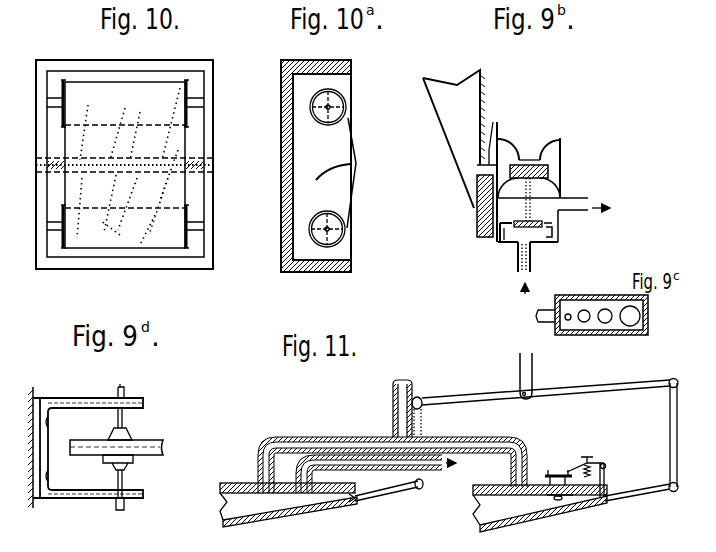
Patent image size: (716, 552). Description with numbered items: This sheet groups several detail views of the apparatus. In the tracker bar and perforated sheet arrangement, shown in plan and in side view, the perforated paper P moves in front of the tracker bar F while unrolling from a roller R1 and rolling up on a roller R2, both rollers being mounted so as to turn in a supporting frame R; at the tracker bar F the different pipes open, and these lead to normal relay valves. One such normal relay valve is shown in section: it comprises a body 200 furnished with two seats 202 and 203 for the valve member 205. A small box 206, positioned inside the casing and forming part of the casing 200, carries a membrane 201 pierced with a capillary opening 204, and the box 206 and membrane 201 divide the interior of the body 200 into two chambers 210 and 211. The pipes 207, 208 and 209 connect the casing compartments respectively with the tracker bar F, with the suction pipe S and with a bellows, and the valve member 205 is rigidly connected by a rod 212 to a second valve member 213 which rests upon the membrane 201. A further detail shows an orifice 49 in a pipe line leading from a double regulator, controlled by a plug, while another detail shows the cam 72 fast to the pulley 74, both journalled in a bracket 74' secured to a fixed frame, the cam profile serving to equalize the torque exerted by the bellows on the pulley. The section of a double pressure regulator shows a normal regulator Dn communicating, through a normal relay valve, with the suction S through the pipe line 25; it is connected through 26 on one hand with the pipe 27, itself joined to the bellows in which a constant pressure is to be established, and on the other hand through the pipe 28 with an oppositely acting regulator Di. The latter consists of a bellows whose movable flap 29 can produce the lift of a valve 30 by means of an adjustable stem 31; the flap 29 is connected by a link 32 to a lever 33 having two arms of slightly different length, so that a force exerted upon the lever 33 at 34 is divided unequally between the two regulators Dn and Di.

In FIG. 10, the supporting frame R is at (40, 118).
In FIG. 10A, the supporting frame R is at (281, 158).
In FIG. 10, the roller R1 is at (187, 93).
In FIG. 10A, the roller R1 is at (326, 121).
In FIG. 10, the roller R2 is at (188, 210).
In FIG. 10A, the roller R2 is at (318, 218).
In FIG. 10, the perforated paper P is at (172, 192).
In FIG. 10A, the perforated paper P is at (357, 137).
In FIG. 10, the tracker bar F is at (38, 163).
In FIG. 10A, the tracker bar F is at (356, 167).
In FIG. 9B, the tracker bar F is at (516, 291).
In FIG. 9B, the suction pipe S is at (447, 107).
In FIG. 11, the suction pipe S is at (381, 474).
In FIG. 9B, the pipe 209 is at (491, 125).
In FIG. 9B, the seat 202 is at (529, 163).
In FIG. 9B, the valve member 205 is at (534, 164).
In FIG. 9B, the body 200 is at (562, 165).
In FIG. 9B, the seat 203 is at (541, 186).
In FIG. 9B, the pipe 208 is at (590, 202).
In FIG. 9B, the rod 212 is at (498, 199).
In FIG. 9B, the chamber 211 is at (542, 199).
In FIG. 9B, the second valve member 213 is at (514, 224).
In FIG. 9B, the capillary opening 204 is at (552, 232).
In FIG. 9B, the small box 206 is at (497, 234).
In FIG. 9B, the membrane 201 is at (512, 229).
In FIG. 9B, the pipe 207 is at (533, 262).
In FIG. 9B, the chamber 210 is at (516, 252).
In FIG. 9C, the orifice 49 is at (568, 319).
In FIG. 9D, the bracket 74' is at (85, 443).
In FIG. 9D, the pulley 74 is at (131, 447).
In FIG. 9D, the cam 72 is at (134, 461).
In FIG. 11, the pipe 26 is at (260, 450).
In FIG. 11, the pipe 27 is at (393, 404).
In FIG. 11, the pipe 28 is at (498, 430).
In FIG. 11, the link 32 is at (422, 410).
In FIG. 11, the lever 33 is at (458, 396).
In FIG. 11, the point of force application 34 is at (534, 390).
In FIG. 11, the pipe line 25 is at (386, 487).
In FIG. 11, the valve 30 is at (558, 472).
In FIG. 11, the movable flap 29 is at (569, 504).
In FIG. 11, the adjustable stem 31 is at (590, 502).
In FIG. 11, the normal regulator Dn is at (235, 505).
In FIG. 11, the oppositely acting regulator Di is at (500, 509).